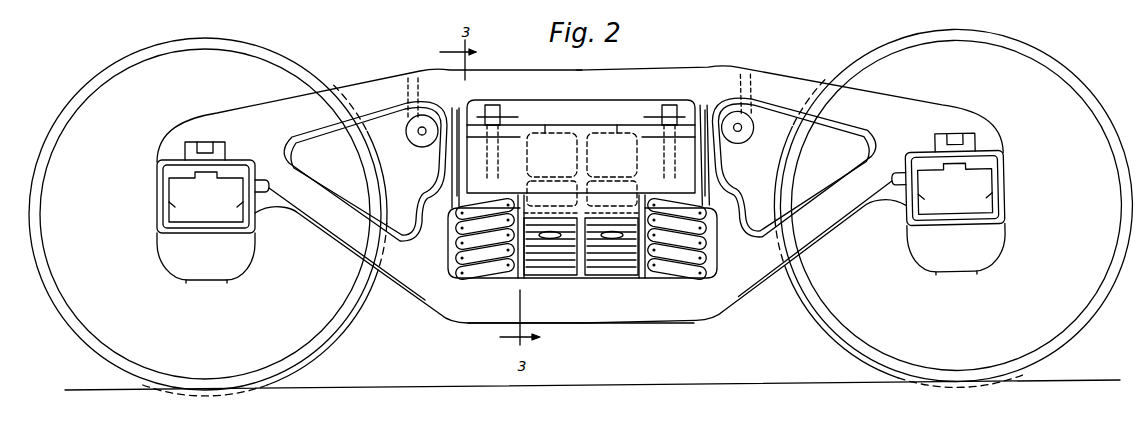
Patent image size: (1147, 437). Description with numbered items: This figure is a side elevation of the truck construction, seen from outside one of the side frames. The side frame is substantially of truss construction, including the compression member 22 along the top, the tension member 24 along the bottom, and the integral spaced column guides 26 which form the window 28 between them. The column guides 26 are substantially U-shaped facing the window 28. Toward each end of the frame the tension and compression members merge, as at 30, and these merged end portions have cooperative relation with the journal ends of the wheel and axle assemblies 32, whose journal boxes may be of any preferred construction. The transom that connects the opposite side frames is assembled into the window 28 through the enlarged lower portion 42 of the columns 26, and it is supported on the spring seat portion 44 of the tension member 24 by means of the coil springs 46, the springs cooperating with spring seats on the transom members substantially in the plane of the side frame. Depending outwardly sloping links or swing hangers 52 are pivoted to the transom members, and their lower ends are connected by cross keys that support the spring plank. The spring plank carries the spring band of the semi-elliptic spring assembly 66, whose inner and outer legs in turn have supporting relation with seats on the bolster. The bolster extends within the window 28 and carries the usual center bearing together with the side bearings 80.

The compression member 22 is at (365, 88).
The tension member 24 is at (407, 283).
The column guides 26 is at (450, 172).
The window 28 is at (601, 103).
The merged end portion 30 is at (220, 122).
The wheel and axle assemblies 32 is at (82, 112).
The enlarged lower portion of the columns 42 is at (715, 258).
The spring seat portion 44 is at (647, 313).
The coil springs 46 is at (485, 273).
The swing hangers 52 is at (490, 108).
The semi-elliptic spring assembly 66 is at (600, 260).
The side bearings 80 is at (557, 127).